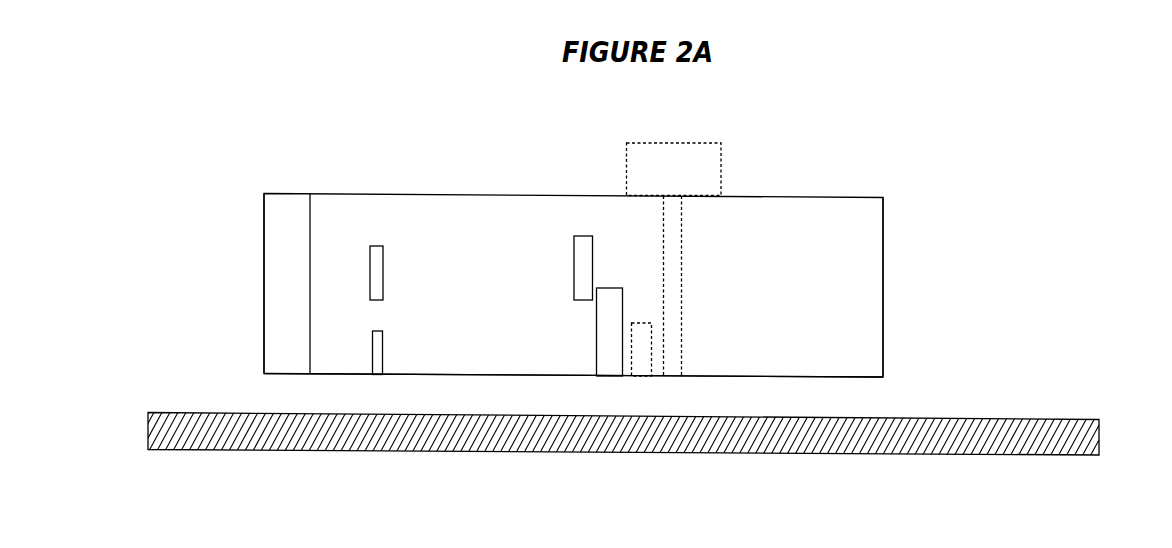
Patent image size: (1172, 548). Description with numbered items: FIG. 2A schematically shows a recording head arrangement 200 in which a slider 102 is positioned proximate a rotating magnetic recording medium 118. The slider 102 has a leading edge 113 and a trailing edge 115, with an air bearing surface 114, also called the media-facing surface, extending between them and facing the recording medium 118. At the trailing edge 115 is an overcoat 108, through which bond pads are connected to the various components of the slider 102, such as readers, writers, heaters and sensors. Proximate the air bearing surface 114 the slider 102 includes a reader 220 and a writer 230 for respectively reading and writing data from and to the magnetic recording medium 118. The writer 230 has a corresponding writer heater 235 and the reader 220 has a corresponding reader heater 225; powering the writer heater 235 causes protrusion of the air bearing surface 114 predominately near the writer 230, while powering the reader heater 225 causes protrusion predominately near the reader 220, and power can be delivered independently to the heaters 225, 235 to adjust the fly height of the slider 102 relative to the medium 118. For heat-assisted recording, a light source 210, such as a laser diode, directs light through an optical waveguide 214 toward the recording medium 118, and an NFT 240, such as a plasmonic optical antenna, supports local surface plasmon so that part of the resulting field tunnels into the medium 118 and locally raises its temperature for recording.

The recording head arrangement 200 is at (421, 147).
The slider 102 is at (905, 176).
The overcoat 108 is at (273, 311).
The trailing edge 115 is at (264, 262).
The leading edge 113 is at (883, 273).
The air bearing surface 114 is at (858, 379).
The magnetic recording medium 118 is at (1100, 431).
The reader heater 225 is at (383, 272).
The reader 220 is at (383, 353).
The writer heater 235 is at (574, 273).
The writer 230 is at (596, 340).
The NFT 240 is at (638, 322).
The optical waveguide 214 is at (684, 252).
The light source 210 is at (722, 172).